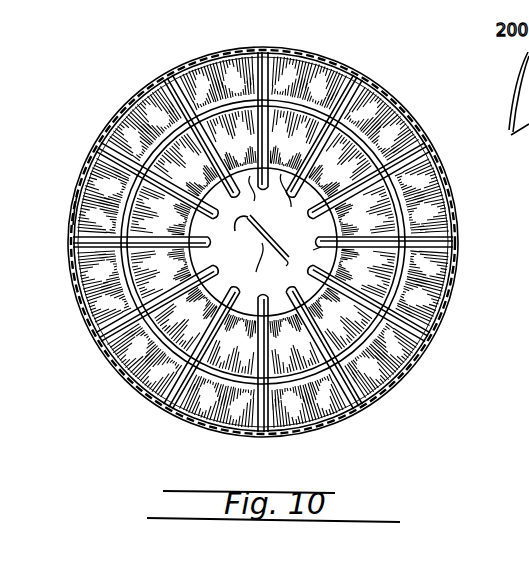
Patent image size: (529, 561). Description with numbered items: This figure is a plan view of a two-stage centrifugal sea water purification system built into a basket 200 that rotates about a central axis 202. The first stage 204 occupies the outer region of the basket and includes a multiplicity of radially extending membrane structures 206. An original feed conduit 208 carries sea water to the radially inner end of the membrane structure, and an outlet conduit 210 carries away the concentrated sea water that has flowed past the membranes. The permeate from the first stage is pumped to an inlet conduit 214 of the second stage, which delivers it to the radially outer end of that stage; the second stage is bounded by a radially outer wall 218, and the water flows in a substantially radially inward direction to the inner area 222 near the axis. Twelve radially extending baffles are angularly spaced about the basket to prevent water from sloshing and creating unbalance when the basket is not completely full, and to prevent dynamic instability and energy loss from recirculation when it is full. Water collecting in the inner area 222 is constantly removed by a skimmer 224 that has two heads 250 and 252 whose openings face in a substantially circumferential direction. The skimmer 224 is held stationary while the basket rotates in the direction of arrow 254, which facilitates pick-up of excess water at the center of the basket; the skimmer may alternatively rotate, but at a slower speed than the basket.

The basket 200 is at (233, 53).
The axis 202 is at (263, 242).
The first stage 204 is at (330, 88).
The membrane structures 206 is at (396, 119).
The original feed conduit 208 is at (268, 195).
The outlet conduit 210 is at (271, 79).
The inlet conduit 214 is at (275, 236).
The radially outer wall 218 is at (406, 223).
The inner area 222 is at (378, 277).
The skimmer 224 is at (300, 269).
The head 250 is at (240, 257).
The head 252 is at (312, 246).
The arrow 254 is at (57, 180).